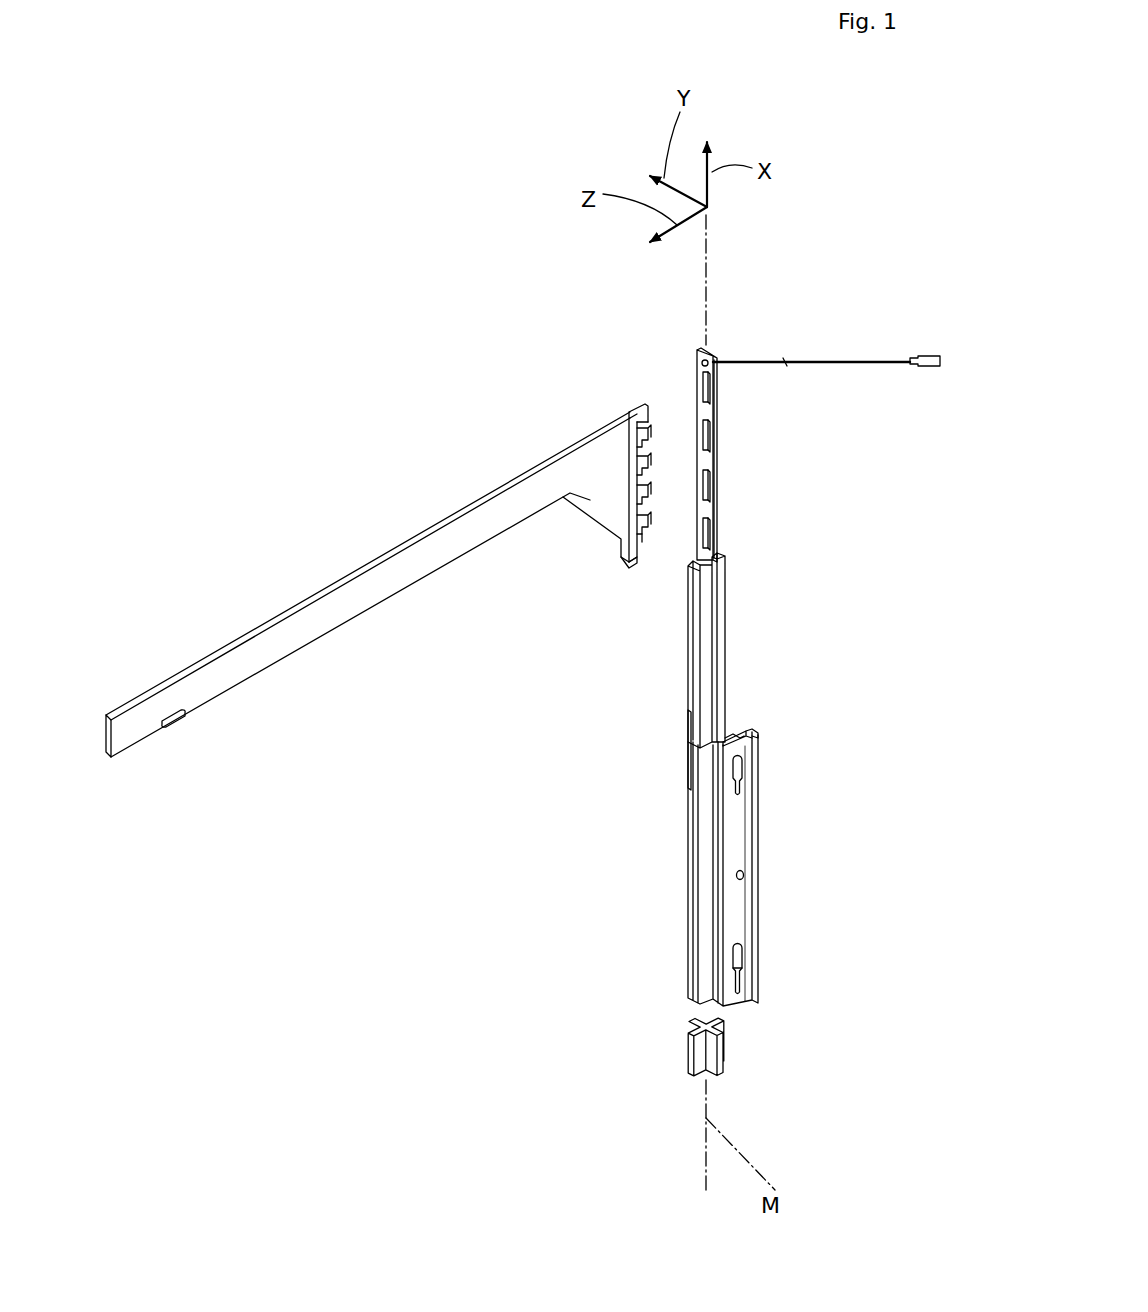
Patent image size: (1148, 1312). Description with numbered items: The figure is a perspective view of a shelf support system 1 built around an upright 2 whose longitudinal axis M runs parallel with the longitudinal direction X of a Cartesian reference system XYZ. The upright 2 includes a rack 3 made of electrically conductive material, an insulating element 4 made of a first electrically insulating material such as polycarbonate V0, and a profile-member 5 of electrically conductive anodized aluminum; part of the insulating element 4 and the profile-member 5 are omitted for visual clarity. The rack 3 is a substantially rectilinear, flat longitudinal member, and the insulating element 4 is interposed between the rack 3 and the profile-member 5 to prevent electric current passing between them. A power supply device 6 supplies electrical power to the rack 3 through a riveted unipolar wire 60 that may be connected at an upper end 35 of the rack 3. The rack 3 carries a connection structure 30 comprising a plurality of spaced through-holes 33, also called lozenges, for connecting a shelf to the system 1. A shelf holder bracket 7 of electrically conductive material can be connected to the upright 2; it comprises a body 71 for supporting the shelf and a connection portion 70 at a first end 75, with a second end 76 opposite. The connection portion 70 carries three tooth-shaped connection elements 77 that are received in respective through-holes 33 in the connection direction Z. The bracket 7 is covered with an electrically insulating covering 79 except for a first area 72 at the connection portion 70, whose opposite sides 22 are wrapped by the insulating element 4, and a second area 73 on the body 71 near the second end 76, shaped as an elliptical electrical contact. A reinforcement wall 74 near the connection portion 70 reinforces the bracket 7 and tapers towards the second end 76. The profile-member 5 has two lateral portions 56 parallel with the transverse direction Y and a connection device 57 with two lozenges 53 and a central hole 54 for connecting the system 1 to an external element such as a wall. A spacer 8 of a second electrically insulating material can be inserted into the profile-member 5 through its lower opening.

The shelf support system 1 is at (293, 190).
The upright 2 is at (851, 1112).
The rack 3 is at (720, 470).
The insulating element 4 is at (728, 660).
The profile-member 5 is at (763, 882).
The power supply device 6 is at (878, 360).
The shelf holder bracket 7 is at (290, 605).
The spacer 8 is at (688, 1063).
The opposite sides 22 is at (629, 416).
The connection structure 30 is at (720, 438).
The through-hole 33 is at (712, 495).
The upper end 35 is at (718, 352).
The lozenges 53 is at (746, 775).
The central hole 54 is at (745, 872).
The lateral portions 56 is at (740, 920).
The connection device 57 is at (749, 972).
The riveted unipolar wire 60 is at (828, 360).
The connection portion 70 is at (633, 408).
The body 71 is at (372, 593).
The first area 72 is at (633, 555).
The second area 73 is at (173, 725).
The reinforcement wall 74 is at (605, 505).
The first end 75 is at (648, 420).
The second end 76 is at (106, 735).
The connection elements 77 is at (645, 535).
The electrically insulating covering 79 is at (452, 537).